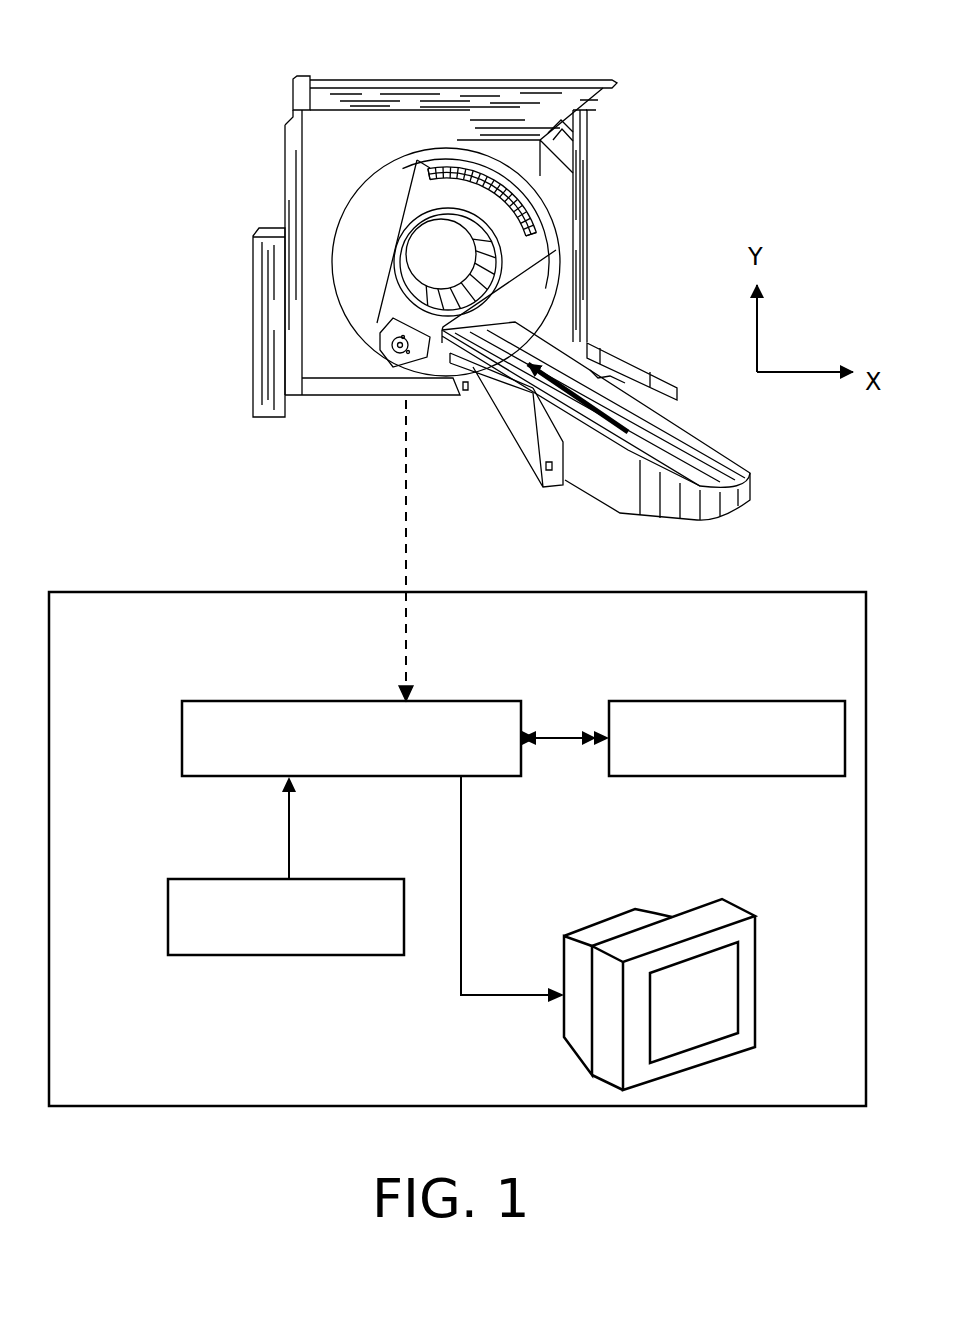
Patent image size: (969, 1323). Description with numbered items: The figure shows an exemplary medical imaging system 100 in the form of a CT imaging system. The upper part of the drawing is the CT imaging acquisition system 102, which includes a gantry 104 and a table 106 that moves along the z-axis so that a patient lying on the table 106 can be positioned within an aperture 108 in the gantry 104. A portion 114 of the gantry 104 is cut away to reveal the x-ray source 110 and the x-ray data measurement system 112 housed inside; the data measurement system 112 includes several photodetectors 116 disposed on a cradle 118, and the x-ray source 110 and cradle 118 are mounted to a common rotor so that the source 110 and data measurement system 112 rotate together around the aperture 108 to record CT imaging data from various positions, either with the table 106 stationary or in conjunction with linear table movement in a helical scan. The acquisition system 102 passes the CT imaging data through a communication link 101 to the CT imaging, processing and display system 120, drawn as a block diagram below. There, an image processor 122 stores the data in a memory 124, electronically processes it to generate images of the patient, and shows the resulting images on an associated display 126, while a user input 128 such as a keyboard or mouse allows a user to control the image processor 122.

The medical imaging system 100 is at (188, 1166).
The communication link 101 is at (405, 506).
The CT imaging acquisition system 102 is at (477, 269).
The gantry 104 is at (335, 388).
The table 106 is at (705, 463).
The aperture 108 is at (436, 253).
The x-ray source 110 is at (380, 338).
The x-ray data measurement system 112 is at (534, 190).
The cut-away portion of the gantry 114 is at (493, 166).
The photodetectors 116 is at (538, 211).
The cradle 118 is at (465, 168).
The CT imaging, processing and display system 120 is at (112, 591).
The image processor 122 is at (224, 700).
The memory 124 is at (660, 700).
The display 126 is at (698, 917).
The user input 128 is at (208, 878).